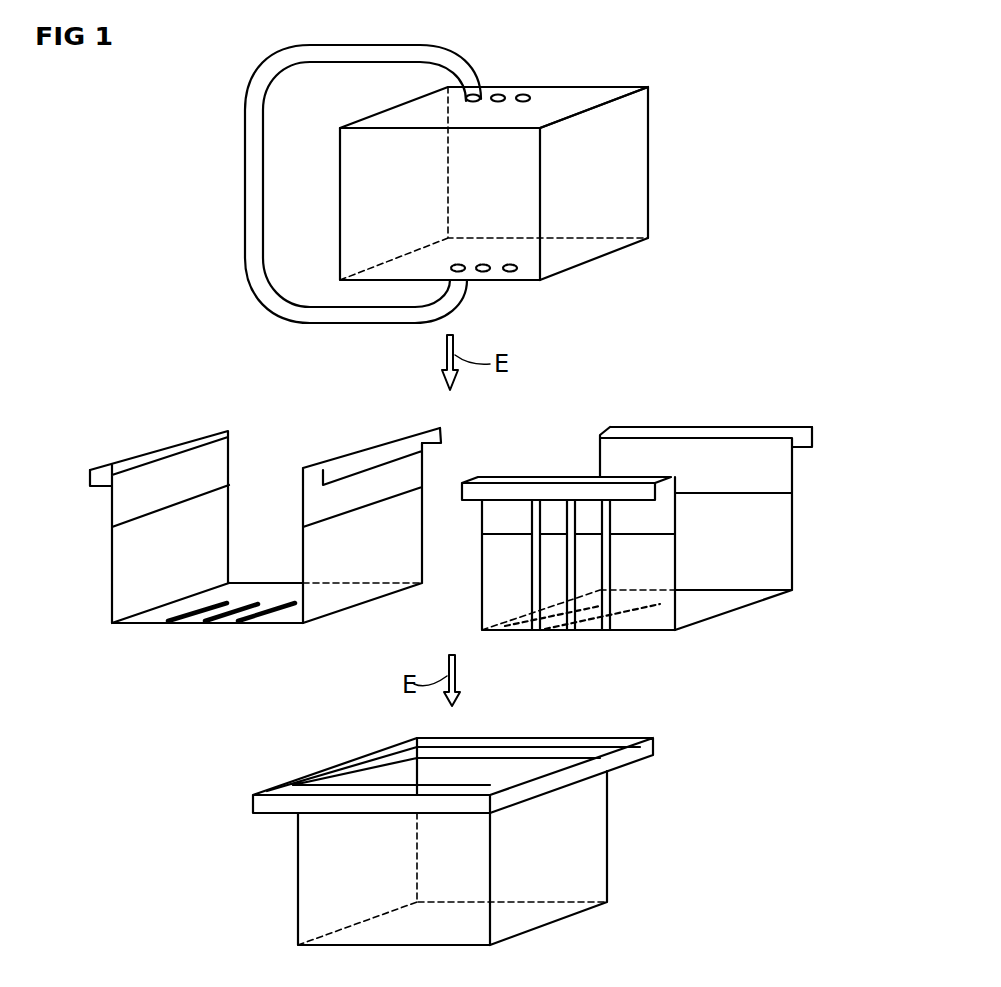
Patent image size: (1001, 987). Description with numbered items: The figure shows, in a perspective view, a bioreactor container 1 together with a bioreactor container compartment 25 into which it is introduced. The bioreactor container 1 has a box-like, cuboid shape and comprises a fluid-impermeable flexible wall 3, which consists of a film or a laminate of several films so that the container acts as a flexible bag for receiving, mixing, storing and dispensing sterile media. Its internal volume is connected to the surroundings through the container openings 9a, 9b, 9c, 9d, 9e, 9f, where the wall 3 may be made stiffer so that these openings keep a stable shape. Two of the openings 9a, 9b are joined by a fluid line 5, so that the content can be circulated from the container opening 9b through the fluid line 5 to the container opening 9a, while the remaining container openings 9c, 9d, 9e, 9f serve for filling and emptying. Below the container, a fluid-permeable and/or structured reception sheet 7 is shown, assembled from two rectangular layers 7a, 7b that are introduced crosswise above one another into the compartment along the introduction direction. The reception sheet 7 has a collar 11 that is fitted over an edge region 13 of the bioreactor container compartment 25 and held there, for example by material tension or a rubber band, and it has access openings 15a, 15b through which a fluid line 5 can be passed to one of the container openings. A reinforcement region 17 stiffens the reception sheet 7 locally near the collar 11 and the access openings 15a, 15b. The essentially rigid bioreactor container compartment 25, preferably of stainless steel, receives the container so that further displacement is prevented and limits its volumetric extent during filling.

The bioreactor container 1 is at (672, 85).
The fluid-impermeable flexible wall 3 is at (638, 158).
The fluid line 5 is at (253, 184).
The reception sheet 7 is at (412, 537).
The layer 7a is at (122, 572).
The layer 7b is at (778, 540).
The container opening 9a is at (473, 102).
The container opening 9b is at (458, 264).
The container opening 9c is at (500, 95).
The container opening 9d is at (483, 272).
The container opening 9e is at (528, 95).
The container opening 9f is at (510, 272).
The collar 11 is at (88, 478).
The edge region 13 is at (255, 801).
The access opening 15a is at (163, 623).
The access opening 15b is at (567, 624).
The reinforcement region 17 is at (307, 493).
The bioreactor container compartment 25 is at (433, 815).